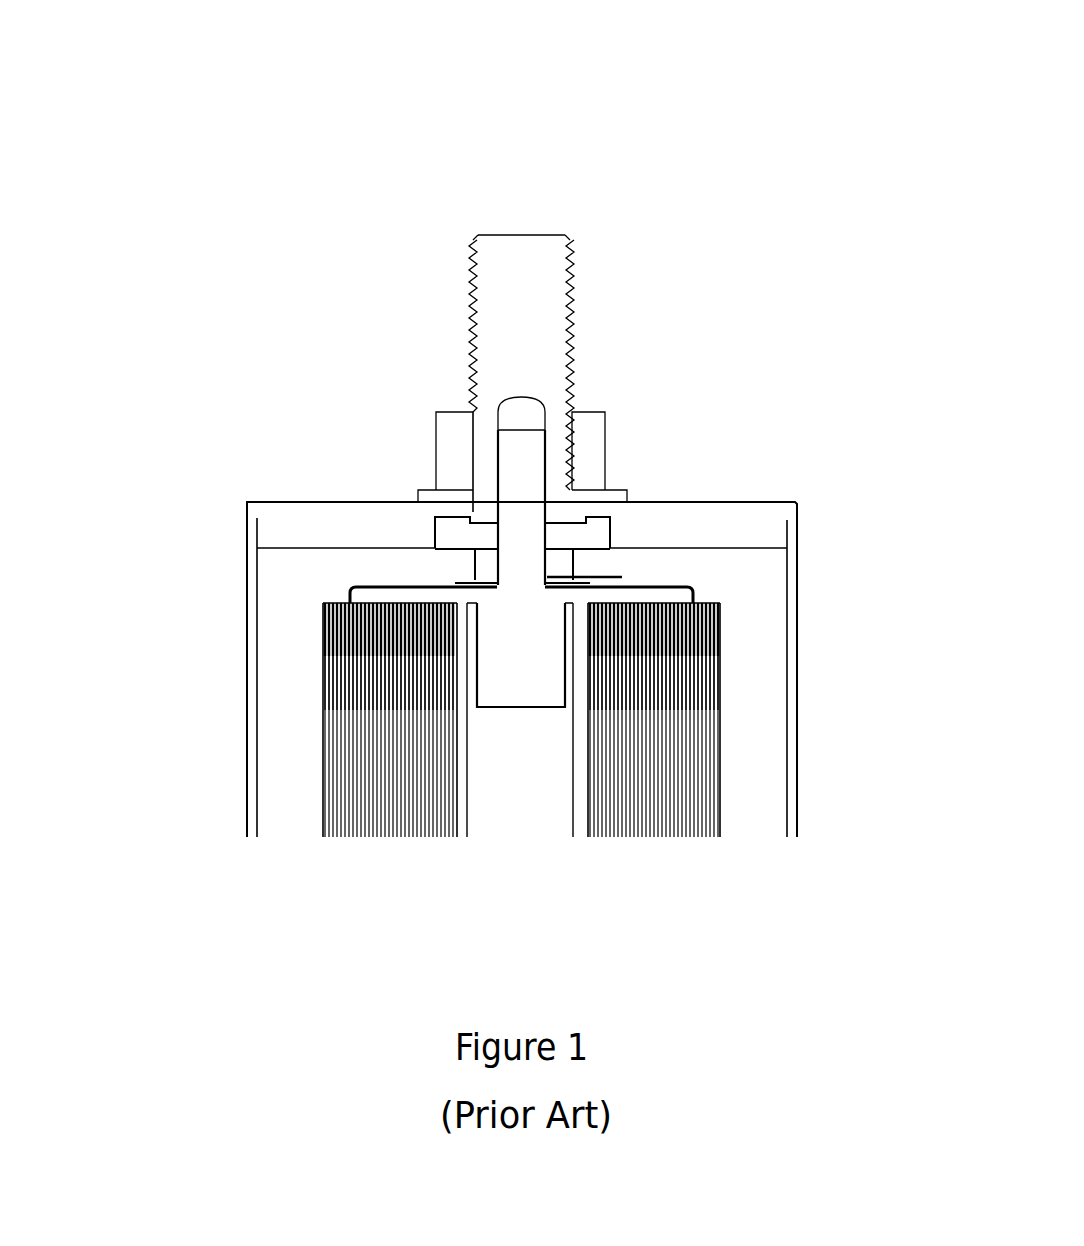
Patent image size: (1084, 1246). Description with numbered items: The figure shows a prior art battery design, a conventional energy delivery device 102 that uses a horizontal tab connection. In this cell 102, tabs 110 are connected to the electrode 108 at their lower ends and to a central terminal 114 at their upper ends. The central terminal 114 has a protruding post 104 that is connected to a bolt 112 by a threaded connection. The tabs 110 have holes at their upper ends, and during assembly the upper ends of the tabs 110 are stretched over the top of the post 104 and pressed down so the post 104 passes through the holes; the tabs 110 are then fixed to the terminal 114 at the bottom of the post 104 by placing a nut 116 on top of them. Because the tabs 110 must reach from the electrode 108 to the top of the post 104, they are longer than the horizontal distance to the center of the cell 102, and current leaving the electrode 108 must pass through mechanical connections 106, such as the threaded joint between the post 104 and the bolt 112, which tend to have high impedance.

The device 102 is at (330, 180).
The protruding post 104 is at (496, 460).
The mechanical connections 106 is at (560, 573).
The electrode 108 is at (325, 600).
The tabs 110 is at (687, 585).
The bolt 112 is at (557, 232).
The central terminal 114 is at (505, 672).
The nut 116 is at (590, 572).